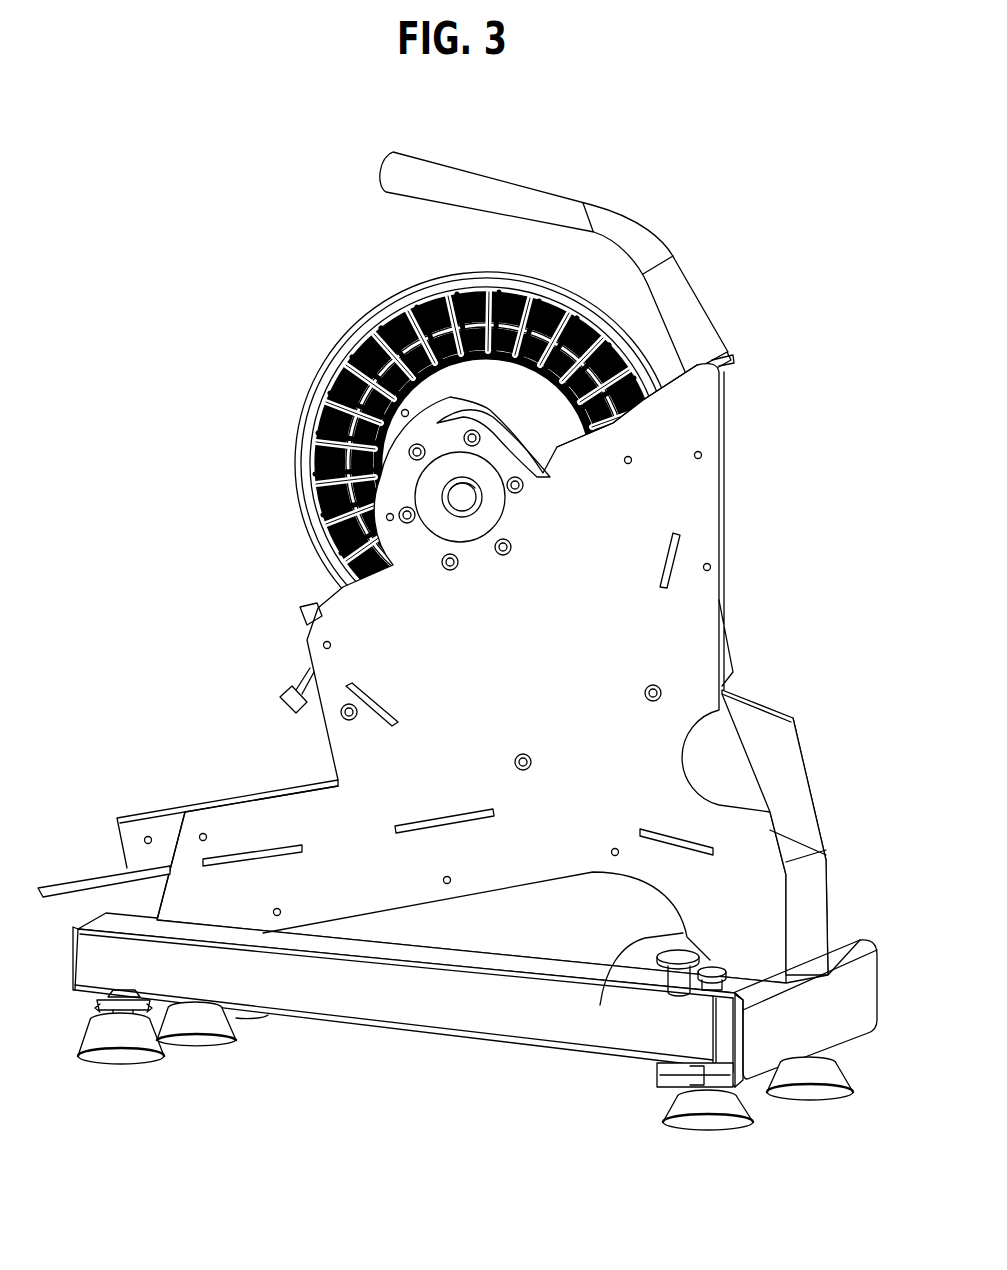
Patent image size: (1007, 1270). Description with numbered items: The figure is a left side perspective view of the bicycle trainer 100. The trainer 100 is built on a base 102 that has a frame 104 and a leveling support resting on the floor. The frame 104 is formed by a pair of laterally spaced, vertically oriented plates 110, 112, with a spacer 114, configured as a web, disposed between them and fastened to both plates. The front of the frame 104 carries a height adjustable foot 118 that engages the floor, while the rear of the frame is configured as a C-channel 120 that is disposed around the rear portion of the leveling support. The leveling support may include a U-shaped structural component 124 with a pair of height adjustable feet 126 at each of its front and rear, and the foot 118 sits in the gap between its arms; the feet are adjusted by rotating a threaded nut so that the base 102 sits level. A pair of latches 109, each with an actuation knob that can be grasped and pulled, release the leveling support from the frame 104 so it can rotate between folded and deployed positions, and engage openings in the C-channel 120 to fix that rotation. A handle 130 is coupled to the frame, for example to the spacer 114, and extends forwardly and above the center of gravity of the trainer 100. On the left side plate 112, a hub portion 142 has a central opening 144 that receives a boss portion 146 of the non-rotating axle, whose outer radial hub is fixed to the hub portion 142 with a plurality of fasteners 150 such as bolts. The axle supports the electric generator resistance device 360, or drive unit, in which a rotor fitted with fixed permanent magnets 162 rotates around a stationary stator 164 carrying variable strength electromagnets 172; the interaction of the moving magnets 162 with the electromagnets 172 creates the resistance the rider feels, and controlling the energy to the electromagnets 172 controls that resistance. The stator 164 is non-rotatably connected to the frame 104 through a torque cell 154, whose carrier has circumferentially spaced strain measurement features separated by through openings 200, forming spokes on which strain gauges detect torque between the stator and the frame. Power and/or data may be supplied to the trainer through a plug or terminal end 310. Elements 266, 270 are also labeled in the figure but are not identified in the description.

The bicycle trainer 100 is at (250, 511).
The base 102 is at (849, 774).
The frame 104 is at (469, 677).
The latches 109 is at (655, 945).
The plate 110 is at (783, 747).
The plate 112 is at (479, 670).
The spacer 114 is at (800, 867).
The foot 118 is at (207, 1043).
The C-channel 120 is at (504, 1009).
The U-shaped structural component 124 is at (492, 1020).
The height adjustable feet 126 is at (138, 1063).
The handle 130 is at (487, 170).
The hub portion 142 is at (607, 347).
The central opening 144 is at (497, 515).
The boss portion 146 is at (480, 546).
The fasteners 150 is at (522, 487).
The torque cell 154 is at (627, 410).
The permanent magnets 162 is at (413, 300).
The stator 164 is at (377, 313).
The electromagnets 172 is at (367, 315).
The through openings 200 is at (522, 474).
The sleeve ring 266 is at (563, 293).
The inner ring 270 is at (326, 338).
The terminal end 310 is at (283, 700).
The electric generator resistance device 360 is at (443, 421).